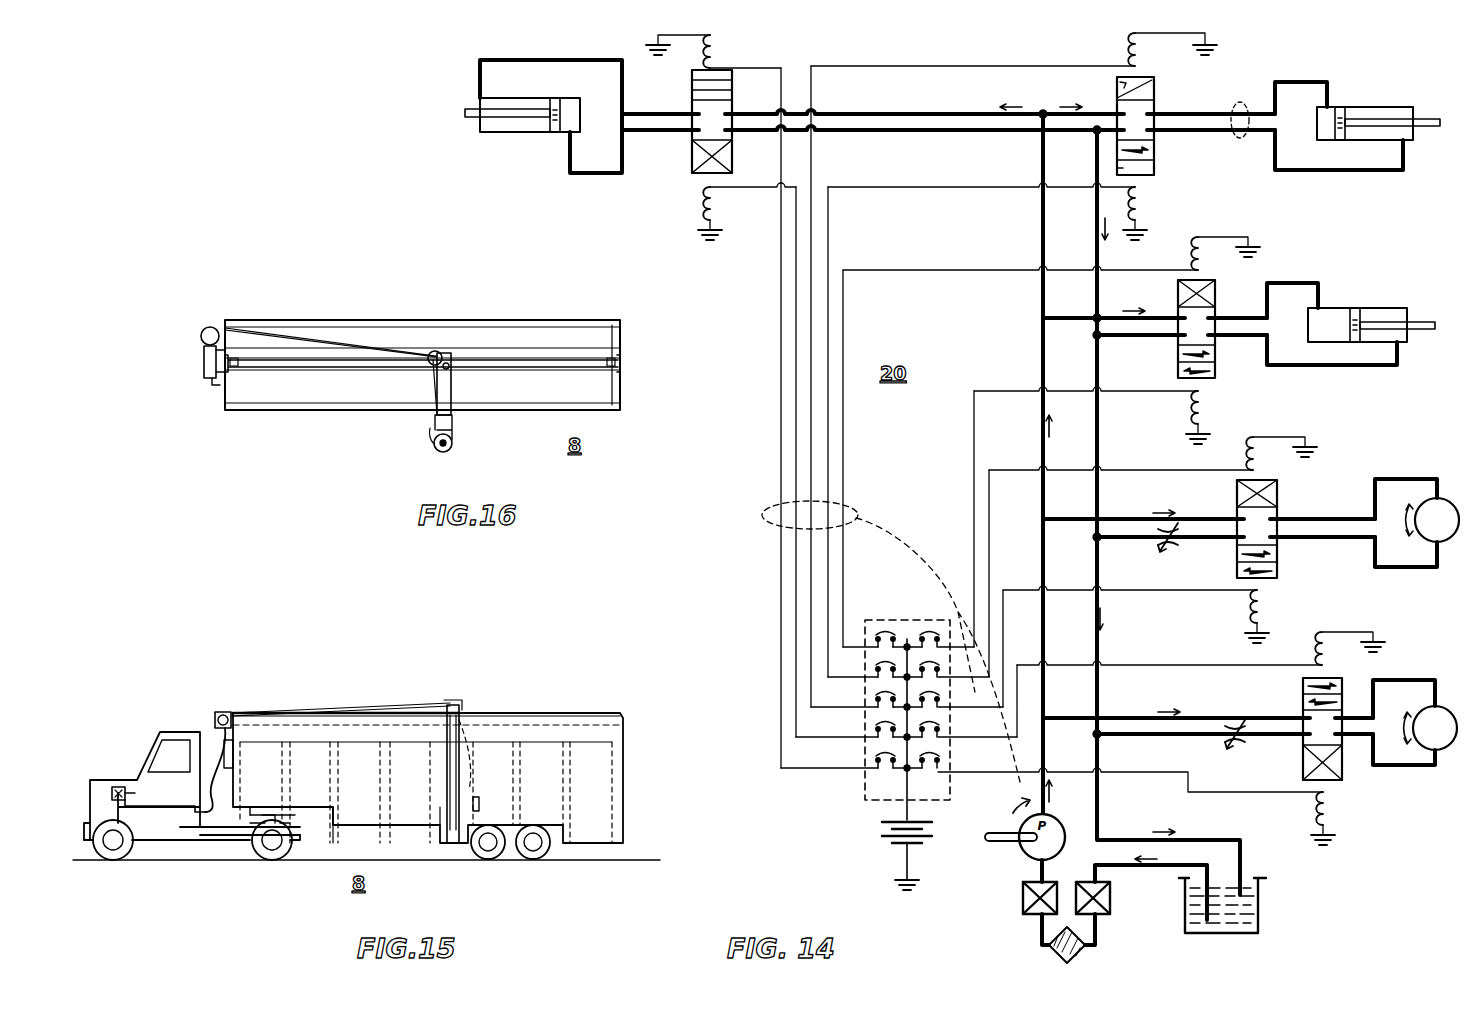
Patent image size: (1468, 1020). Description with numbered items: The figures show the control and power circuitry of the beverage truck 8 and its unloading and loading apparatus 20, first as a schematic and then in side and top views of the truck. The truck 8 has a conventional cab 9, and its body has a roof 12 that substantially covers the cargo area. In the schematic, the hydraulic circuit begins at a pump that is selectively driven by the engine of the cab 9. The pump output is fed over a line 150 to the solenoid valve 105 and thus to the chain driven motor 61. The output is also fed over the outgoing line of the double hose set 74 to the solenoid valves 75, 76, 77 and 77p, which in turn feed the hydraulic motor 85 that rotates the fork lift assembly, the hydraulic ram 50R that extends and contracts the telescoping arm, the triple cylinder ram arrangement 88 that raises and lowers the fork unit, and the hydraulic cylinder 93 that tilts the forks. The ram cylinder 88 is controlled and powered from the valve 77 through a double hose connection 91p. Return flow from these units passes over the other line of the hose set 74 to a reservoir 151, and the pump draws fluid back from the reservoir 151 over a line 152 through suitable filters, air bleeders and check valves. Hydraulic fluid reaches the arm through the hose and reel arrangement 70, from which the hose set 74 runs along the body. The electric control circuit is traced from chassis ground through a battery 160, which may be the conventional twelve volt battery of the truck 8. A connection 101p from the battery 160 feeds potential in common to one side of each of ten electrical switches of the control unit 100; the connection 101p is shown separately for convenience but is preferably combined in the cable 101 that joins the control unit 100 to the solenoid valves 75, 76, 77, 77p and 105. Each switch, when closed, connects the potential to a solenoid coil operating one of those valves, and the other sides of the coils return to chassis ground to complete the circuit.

In FIG. 15, the beverage truck 8 is at (604, 792).
In FIG. 15, the cab 9 is at (90, 787).
In FIG. 16, the roof 12 is at (322, 388).
In FIG. 16, the unloading and loading apparatus 20 is at (396, 365).
In FIG. 15, the unloading and loading apparatus 20 is at (481, 709).
In FIG. 14, the hydraulic ram 50R is at (1365, 308).
In FIG. 14, the chain driven motor 61 is at (1467, 705).
In FIG. 16, the hose and reel arrangement 70 is at (210, 326).
In FIG. 15, the hose and reel arrangement 70 is at (224, 715).
In FIG. 14, the double hose set 74 is at (1093, 643).
In FIG. 16, the double hose set 74 is at (334, 342).
In FIG. 15, the double hose set 74 is at (440, 706).
In FIG. 14, the solenoid valve 75 is at (1277, 563).
In FIG. 14, the solenoid valve 76 is at (1215, 365).
In FIG. 16, the solenoid valve 76 is at (436, 352).
In FIG. 14, the solenoid valve 77 is at (1156, 163).
In FIG. 14, the solenoid valve 77p is at (692, 175).
In FIG. 14, the hydraulic motor 85 is at (1456, 501).
In FIG. 14, the triple cylinder ram arrangement 88 is at (1362, 107).
In FIG. 14, the double hose connection 91p is at (1247, 150).
In FIG. 14, the hydraulic cylinder 93 is at (498, 134).
In FIG. 14, the control unit 100 is at (858, 806).
In FIG. 15, the control unit 100 is at (482, 800).
In FIG. 14, the cable 101 is at (914, 559).
In FIG. 15, the cable 101 is at (464, 742).
In FIG. 14, the connection from the battery 101p is at (888, 826).
In FIG. 14, the solenoid valve 105 is at (1342, 765).
In FIG. 14, the line 150 is at (1068, 700).
In FIG. 15, the line 150 is at (194, 802).
In FIG. 14, the reservoir 151 is at (1258, 905).
In FIG. 15, the reservoir 151 is at (233, 748).
In FIG. 14, the line 152 is at (1148, 870).
In FIG. 15, the line 152 is at (147, 807).
In FIG. 14, the battery 160 is at (934, 837).